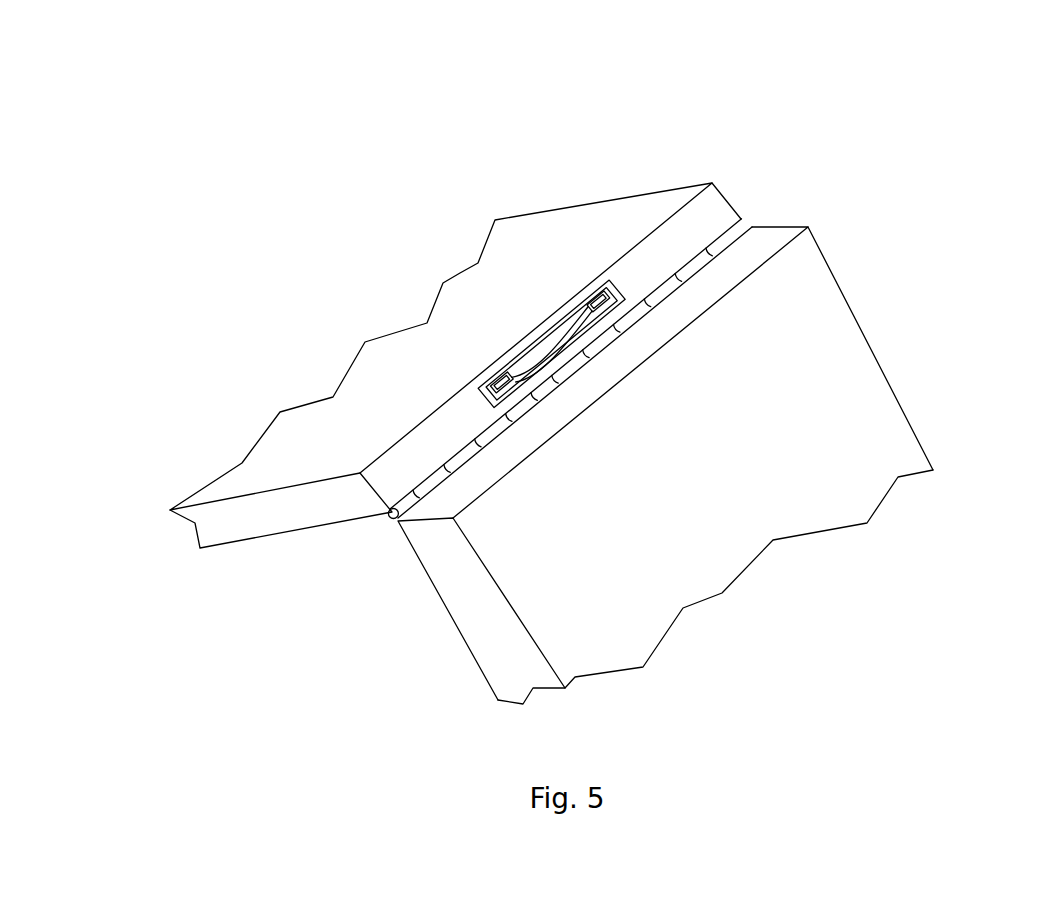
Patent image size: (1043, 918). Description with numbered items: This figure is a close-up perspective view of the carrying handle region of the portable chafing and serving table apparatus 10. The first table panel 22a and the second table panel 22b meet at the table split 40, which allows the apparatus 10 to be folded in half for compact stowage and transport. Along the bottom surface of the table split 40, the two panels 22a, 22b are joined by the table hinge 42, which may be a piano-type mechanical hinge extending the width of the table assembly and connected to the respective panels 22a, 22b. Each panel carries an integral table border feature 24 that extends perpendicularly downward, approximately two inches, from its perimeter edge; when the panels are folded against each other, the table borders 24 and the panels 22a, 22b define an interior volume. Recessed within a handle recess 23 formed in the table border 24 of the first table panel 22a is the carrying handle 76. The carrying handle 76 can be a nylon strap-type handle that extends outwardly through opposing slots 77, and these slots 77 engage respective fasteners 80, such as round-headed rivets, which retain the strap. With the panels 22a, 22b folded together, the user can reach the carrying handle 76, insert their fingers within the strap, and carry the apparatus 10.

The apparatus 10 is at (937, 146).
The first table panel 22a is at (312, 423).
The second table panel 22b is at (840, 372).
The handle recess 23 is at (527, 347).
The table border feature 24 is at (470, 582).
The table split 40 is at (742, 222).
The table hinge 42 is at (896, 348).
The carrying handle 76 is at (551, 232).
The slots 77 is at (596, 293).
The fasteners 80 is at (609, 290).